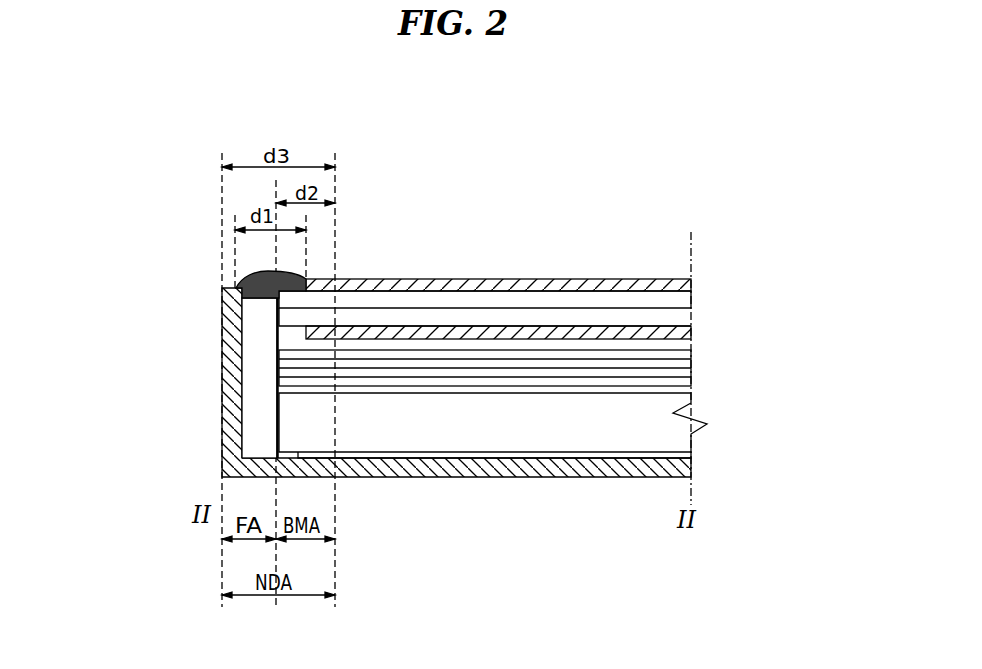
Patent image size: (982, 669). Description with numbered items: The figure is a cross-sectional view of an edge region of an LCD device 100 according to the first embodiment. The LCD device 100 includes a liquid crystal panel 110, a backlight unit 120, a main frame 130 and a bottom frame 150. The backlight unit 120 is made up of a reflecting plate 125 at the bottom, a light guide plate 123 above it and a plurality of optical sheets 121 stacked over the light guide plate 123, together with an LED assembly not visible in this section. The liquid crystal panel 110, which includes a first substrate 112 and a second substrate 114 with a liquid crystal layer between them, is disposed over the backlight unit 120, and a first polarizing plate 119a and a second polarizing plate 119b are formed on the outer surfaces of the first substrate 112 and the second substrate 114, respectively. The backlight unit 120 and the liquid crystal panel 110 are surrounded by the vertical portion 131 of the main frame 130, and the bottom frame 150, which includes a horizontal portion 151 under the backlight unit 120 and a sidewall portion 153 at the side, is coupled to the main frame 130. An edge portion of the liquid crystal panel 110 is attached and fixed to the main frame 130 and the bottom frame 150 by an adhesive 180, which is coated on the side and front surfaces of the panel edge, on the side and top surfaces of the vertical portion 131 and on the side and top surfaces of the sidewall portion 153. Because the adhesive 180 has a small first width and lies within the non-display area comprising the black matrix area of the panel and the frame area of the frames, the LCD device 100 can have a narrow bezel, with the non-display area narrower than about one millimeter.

The LCD device 100 is at (443, 127).
The liquid crystal panel 110 is at (557, 208).
The first substrate 112 is at (525, 318).
The second substrate 114 is at (477, 305).
The first polarizing plate 119a is at (638, 330).
The second polarizing plate 119b is at (588, 287).
The backlight unit 120 is at (790, 370).
The optical sheets 121 is at (692, 356).
The light guide plate 123 is at (690, 437).
The reflecting plate 125 is at (690, 458).
The main frame 130 is at (240, 335).
The vertical portion 131 is at (253, 362).
The bottom frame 150 is at (113, 520).
The horizontal portion 151 is at (293, 477).
The sidewall portion 153 is at (226, 424).
The adhesive 180 is at (235, 282).